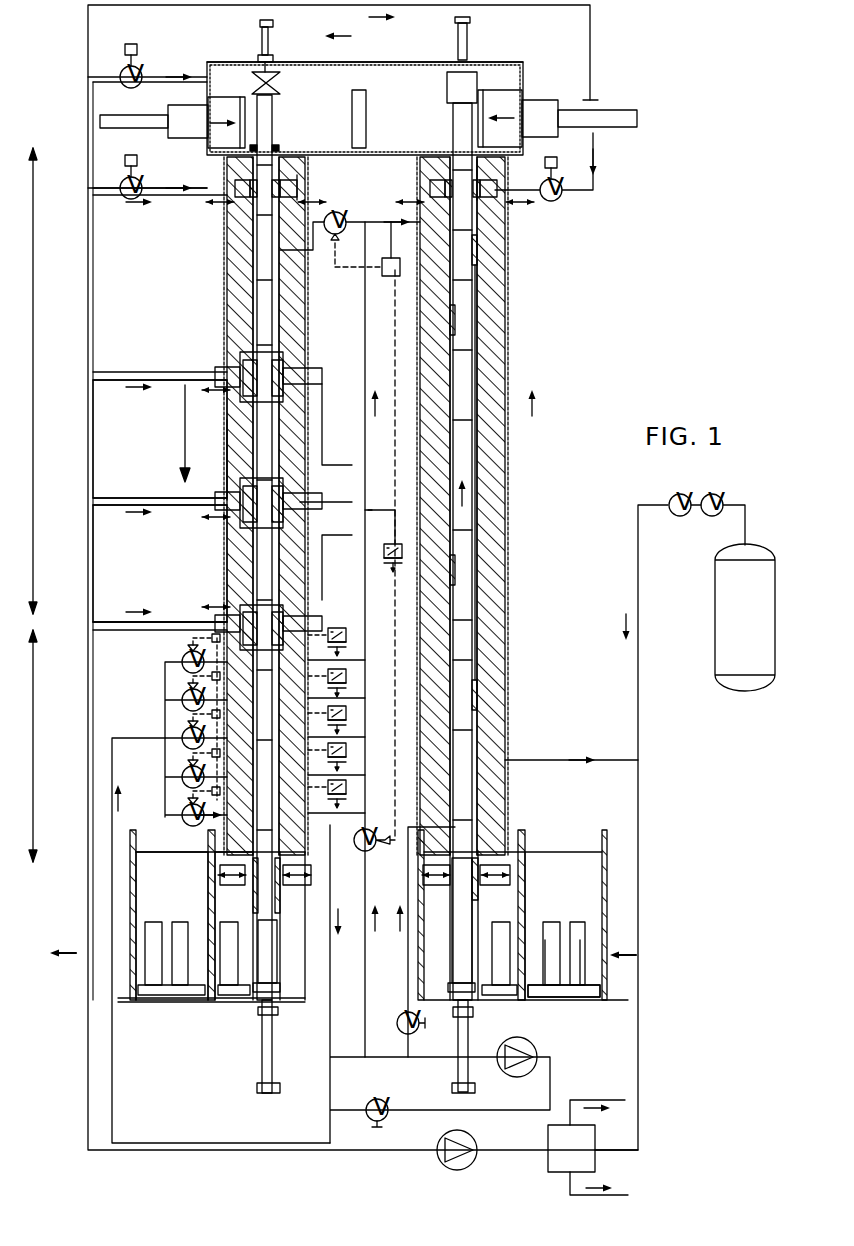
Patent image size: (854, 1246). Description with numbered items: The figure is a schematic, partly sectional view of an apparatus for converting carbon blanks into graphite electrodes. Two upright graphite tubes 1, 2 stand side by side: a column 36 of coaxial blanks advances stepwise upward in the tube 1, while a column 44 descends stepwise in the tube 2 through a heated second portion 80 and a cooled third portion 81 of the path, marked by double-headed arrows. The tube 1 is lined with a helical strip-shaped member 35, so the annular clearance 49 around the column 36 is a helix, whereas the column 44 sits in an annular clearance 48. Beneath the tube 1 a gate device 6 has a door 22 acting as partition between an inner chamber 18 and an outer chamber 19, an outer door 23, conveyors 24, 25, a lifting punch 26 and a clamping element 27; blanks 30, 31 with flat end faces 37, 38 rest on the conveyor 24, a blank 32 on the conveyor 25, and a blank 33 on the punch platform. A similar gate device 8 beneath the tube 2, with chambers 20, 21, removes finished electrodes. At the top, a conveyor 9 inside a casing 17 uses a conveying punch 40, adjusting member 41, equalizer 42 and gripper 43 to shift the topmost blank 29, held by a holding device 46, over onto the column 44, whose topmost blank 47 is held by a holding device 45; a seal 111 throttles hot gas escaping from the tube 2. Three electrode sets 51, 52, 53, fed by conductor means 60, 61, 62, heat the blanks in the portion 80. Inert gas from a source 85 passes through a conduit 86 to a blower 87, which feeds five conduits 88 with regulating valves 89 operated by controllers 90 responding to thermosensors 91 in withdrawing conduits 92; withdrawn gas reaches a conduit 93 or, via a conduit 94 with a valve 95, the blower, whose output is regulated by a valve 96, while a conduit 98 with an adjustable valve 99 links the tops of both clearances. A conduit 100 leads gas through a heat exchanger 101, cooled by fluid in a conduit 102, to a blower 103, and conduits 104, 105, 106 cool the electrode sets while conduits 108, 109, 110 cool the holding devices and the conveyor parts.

The graphite tube 1 is at (511, 362).
The graphite tube 2 is at (208, 319).
The gate device 6 is at (564, 846).
The gate device 8 is at (131, 1003).
The conveyor 9 is at (400, 46).
The casing 17 is at (292, 72).
The inner chamber 18 is at (534, 852).
The chamber 19 is at (593, 869).
The chamber 20 is at (196, 999).
The inner chamber 21 is at (246, 996).
The door 22 is at (208, 845).
The door 23 is at (154, 804).
The conveyor 24 is at (159, 996).
The conveyor 25 is at (499, 999).
The lifting punch 26 is at (279, 1001).
The clamping element 27 is at (236, 886).
The topmost blank 29 is at (481, 212).
The carbon blank 30 is at (583, 997).
The carbon blank 31 is at (551, 986).
The carbon blank 32 is at (502, 904).
The carbon blank 33 is at (456, 959).
The helical strip-shaped member 35 is at (471, 592).
The column of blanks 36 is at (486, 572).
The end face 37 is at (576, 923).
The end face 38 is at (579, 977).
The conveying punch 40 is at (511, 96).
The adjusting member 41 is at (262, 42).
The equalizer 42 is at (134, 122).
The gripper 43 is at (471, 72).
The column of blanks 44 is at (240, 449).
The holding device 45 is at (291, 189).
The holding device 46 is at (436, 193).
The topmost blank 47 is at (262, 210).
The annular clearance 48 is at (258, 277).
The annular clearance 49 is at (472, 291).
The set of electrodes 51 is at (283, 354).
The set of electrodes 52 is at (296, 487).
The set of electrodes 53 is at (286, 612).
The conductor means 60 is at (323, 384).
The conductor means 61 is at (322, 503).
The conductor means 62 is at (322, 540).
The second portion of the path 80 is at (28, 410).
The third portion of the path 81 is at (28, 770).
The source of inert gas 85 is at (726, 636).
The conduit 86 is at (640, 713).
The blower 87 is at (513, 1077).
The conduits 88 is at (179, 663).
The regulating valve 89 is at (186, 672).
The controller 90 is at (338, 628).
The thermosensor 91 is at (347, 661).
The gas withdrawing conduits 92 is at (353, 664).
The conduit 93 is at (372, 378).
The conduit 94 is at (333, 1001).
The valve 95 is at (373, 851).
The valve 96 is at (401, 1031).
The conduit 98 is at (351, 220).
The adjustable valve 99 is at (335, 246).
The conduit 100 is at (641, 1112).
The heat exchanger 101 is at (561, 1171).
The conduit 102 is at (581, 1101).
The blower 103 is at (446, 1171).
The conduit 104 is at (172, 623).
The conduit 105 is at (137, 508).
The conduit 106 is at (131, 383).
The conduit 108 is at (112, 197).
The conduit 109 is at (586, 192).
The conduit 110 is at (152, 73).
The seal 111 is at (281, 147).